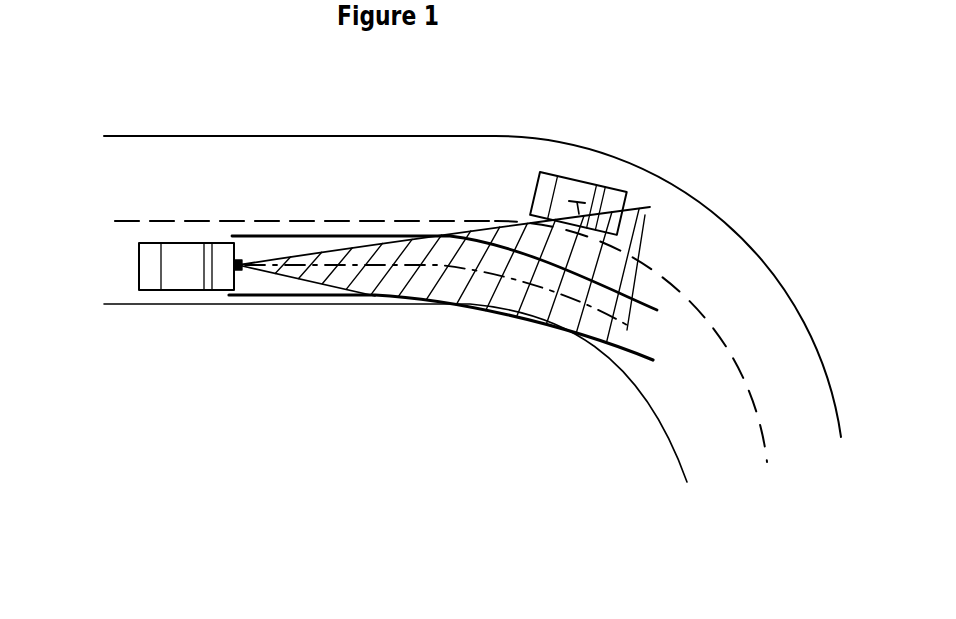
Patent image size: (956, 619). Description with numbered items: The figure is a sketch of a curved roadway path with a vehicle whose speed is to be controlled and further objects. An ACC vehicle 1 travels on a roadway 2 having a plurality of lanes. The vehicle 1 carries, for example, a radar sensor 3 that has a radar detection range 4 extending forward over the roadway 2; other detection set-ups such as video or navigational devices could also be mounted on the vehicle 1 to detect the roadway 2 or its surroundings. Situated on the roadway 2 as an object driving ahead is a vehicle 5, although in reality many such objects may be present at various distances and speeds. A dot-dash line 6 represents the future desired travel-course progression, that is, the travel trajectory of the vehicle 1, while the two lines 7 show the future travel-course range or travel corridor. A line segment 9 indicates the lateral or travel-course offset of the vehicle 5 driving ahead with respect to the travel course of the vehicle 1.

The ACC vehicle 1 is at (178, 297).
The roadway 2 is at (737, 232).
The radar sensor 3 is at (242, 258).
The radar detection range 4 is at (355, 300).
The vehicle 5 is at (587, 178).
The dot-dash line 6 is at (624, 335).
The lines 7 is at (270, 236).
The line segment 9 is at (578, 208).